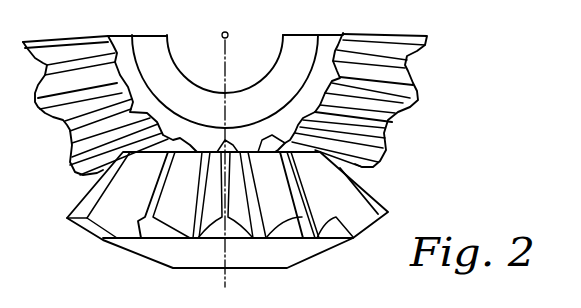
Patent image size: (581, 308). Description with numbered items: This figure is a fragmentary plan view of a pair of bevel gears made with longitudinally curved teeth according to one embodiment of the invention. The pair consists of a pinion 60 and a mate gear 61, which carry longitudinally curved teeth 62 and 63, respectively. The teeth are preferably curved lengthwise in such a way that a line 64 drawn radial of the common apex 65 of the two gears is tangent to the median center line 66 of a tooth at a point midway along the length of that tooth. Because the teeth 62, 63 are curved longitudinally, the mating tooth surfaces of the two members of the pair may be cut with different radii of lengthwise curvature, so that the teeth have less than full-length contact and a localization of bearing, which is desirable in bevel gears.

The pinion 60 is at (307, 253).
The mate gear 61 is at (288, 52).
The longitudinally curved teeth 62 is at (343, 203).
The longitudinally curved teeth 63 is at (62, 113).
The radial line 64 is at (222, 279).
The common apex 65 is at (221, 33).
The median center line 66 is at (228, 247).